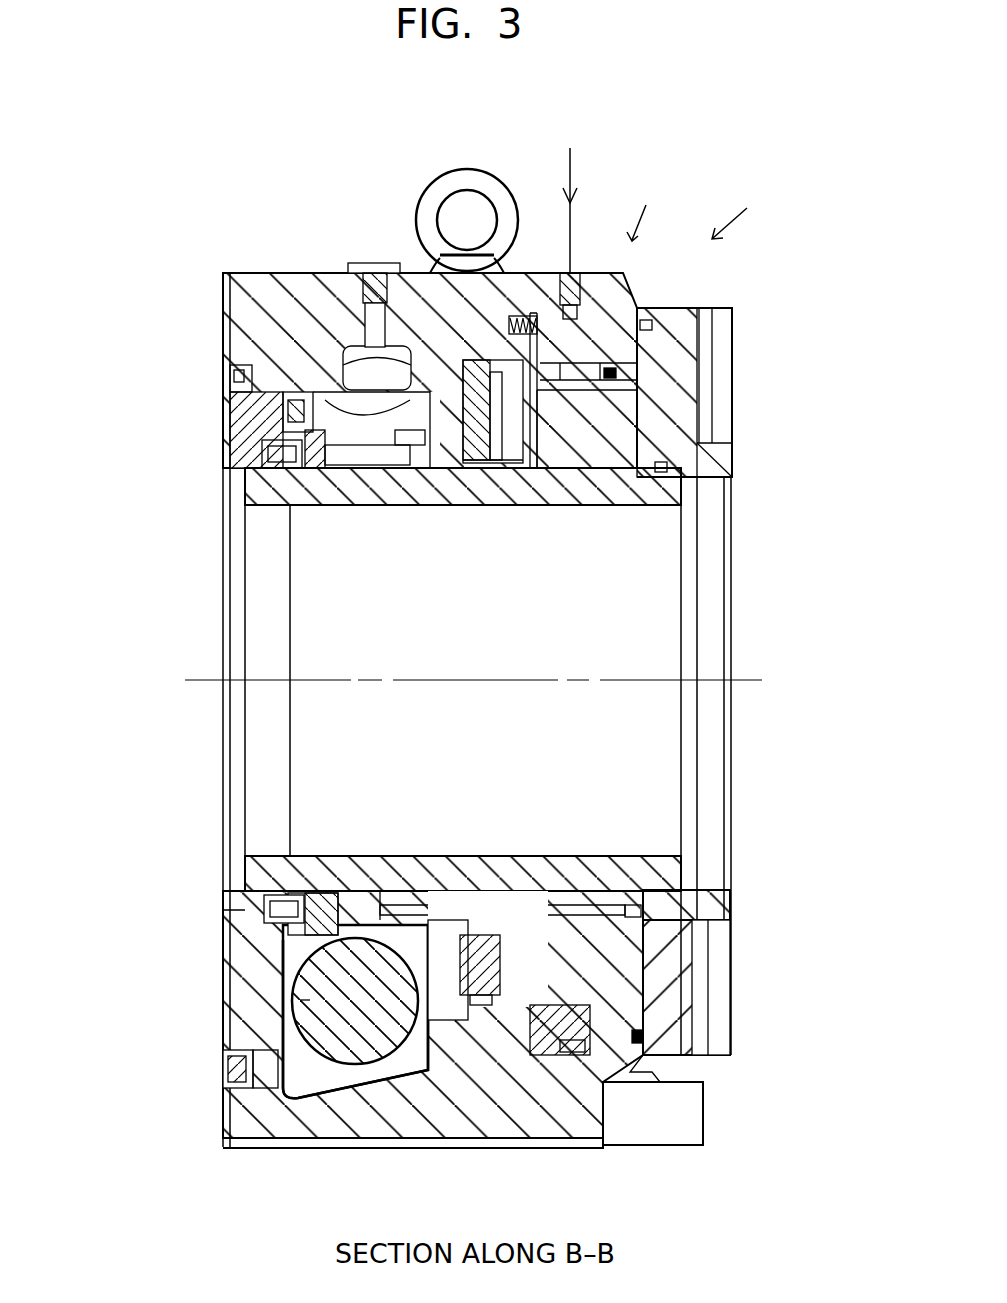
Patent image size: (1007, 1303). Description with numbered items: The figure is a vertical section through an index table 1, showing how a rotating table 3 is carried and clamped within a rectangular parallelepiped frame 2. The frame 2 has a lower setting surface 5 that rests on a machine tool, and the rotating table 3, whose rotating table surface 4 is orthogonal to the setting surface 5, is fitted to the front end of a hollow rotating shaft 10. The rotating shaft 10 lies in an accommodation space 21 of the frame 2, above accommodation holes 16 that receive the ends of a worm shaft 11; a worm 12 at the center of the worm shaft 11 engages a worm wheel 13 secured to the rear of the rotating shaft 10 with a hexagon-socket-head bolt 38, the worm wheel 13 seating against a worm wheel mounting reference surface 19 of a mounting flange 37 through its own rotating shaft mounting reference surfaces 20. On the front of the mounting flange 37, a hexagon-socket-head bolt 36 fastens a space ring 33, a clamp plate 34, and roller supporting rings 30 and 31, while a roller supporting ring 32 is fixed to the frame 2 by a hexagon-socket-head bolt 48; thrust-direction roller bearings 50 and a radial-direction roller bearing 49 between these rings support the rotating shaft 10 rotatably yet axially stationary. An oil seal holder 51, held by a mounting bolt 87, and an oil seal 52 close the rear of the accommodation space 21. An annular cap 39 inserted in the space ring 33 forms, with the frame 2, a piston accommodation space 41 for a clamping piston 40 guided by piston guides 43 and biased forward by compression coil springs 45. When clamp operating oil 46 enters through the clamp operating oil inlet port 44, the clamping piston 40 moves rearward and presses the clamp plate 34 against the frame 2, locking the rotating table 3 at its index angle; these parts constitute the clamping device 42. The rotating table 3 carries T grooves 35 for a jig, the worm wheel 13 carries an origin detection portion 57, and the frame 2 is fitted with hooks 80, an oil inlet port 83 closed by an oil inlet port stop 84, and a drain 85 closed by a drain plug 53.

The index table 1 is at (737, 213).
The frame 2 is at (222, 292).
The rotating table 3 is at (733, 775).
The rotating table surface 4 is at (736, 460).
The setting surface 5 is at (458, 1140).
The rotating shaft 10 is at (668, 486).
The worm shaft 11 is at (300, 1002).
The worm 12 is at (352, 1060).
The worm wheel 13 is at (288, 940).
The accommodation holes 16 is at (376, 1073).
The worm wheel mounting reference surface 19 is at (370, 855).
The rotating shaft mounting reference surfaces 20 is at (382, 508).
The accommodation space 21 is at (238, 889).
The roller supporting ring 30 is at (436, 856).
The roller supporting ring 31 is at (516, 856).
The roller supporting ring 32 is at (440, 1020).
The space ring 33 is at (628, 947).
The clamp plate 34 is at (534, 507).
The T grooves 35 is at (713, 353).
The hexagon-socket-head bolt 36 is at (640, 913).
The mounting flange 37 is at (416, 508).
The hexagon-socket-head bolt 38 is at (314, 508).
The annular cap 39 is at (622, 1072).
The clamping piston 40 is at (590, 470).
The piston accommodation space 41 is at (528, 1040).
The clamping device 42 is at (646, 208).
The piston guides 43 is at (620, 372).
The clamp operating oil inlet port 44 is at (568, 272).
The compression coil springs 45 is at (508, 320).
The clamp operating oil 46 is at (566, 167).
The hexagon-socket-head bolt 48 is at (650, 326).
The radial-direction roller bearing 49 is at (480, 856).
The thrust-direction roller bearing 50 is at (490, 507).
The oil seal holder 51 is at (228, 425).
The oil seal 52 is at (265, 455).
The drain plug 53 is at (225, 1085).
The origin detection portion 57 is at (288, 410).
The hooks 80 is at (437, 188).
The oil inlet port 83 is at (377, 368).
The oil inlet port stop 84 is at (370, 266).
The drain 85 is at (224, 1068).
The mounting bolt 87 is at (230, 372).